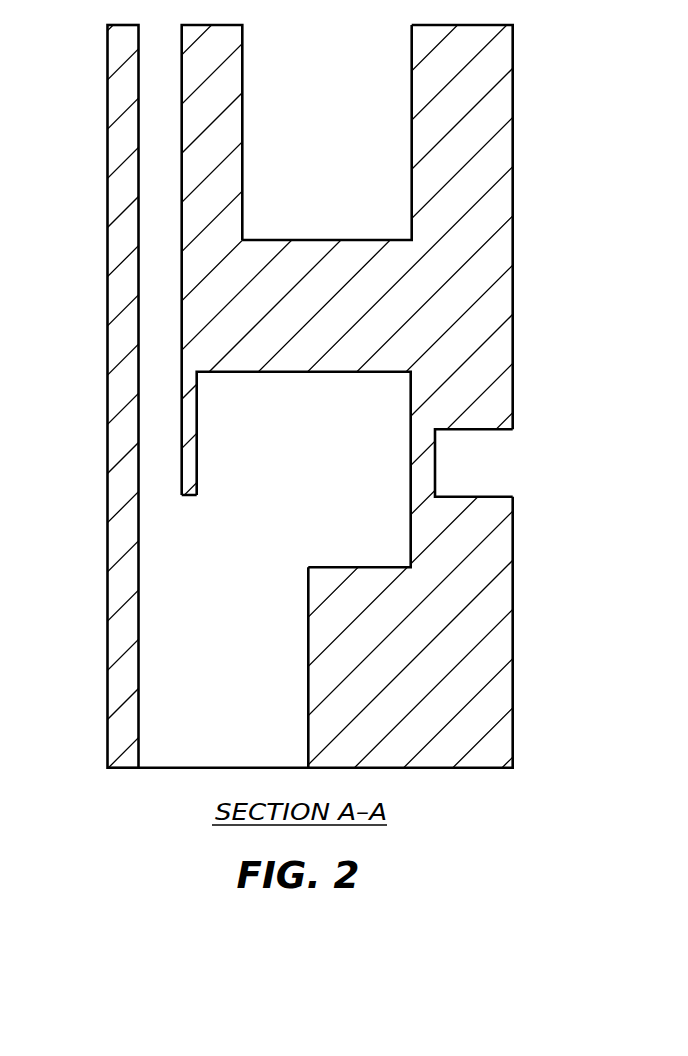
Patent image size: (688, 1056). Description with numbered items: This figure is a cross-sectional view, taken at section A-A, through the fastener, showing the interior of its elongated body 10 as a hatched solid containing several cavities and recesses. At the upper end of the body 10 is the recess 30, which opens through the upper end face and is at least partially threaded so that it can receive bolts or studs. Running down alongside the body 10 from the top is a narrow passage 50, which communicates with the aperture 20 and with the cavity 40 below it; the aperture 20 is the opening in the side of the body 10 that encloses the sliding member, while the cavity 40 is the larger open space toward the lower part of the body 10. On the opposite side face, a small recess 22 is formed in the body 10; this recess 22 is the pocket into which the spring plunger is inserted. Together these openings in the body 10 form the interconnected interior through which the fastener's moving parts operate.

The elongated body 10 is at (160, 182).
The aperture 20 is at (316, 480).
The recess 22 is at (473, 458).
The threaded recess 30 is at (335, 102).
The cavity 40 is at (233, 676).
The passage 50 is at (177, 90).